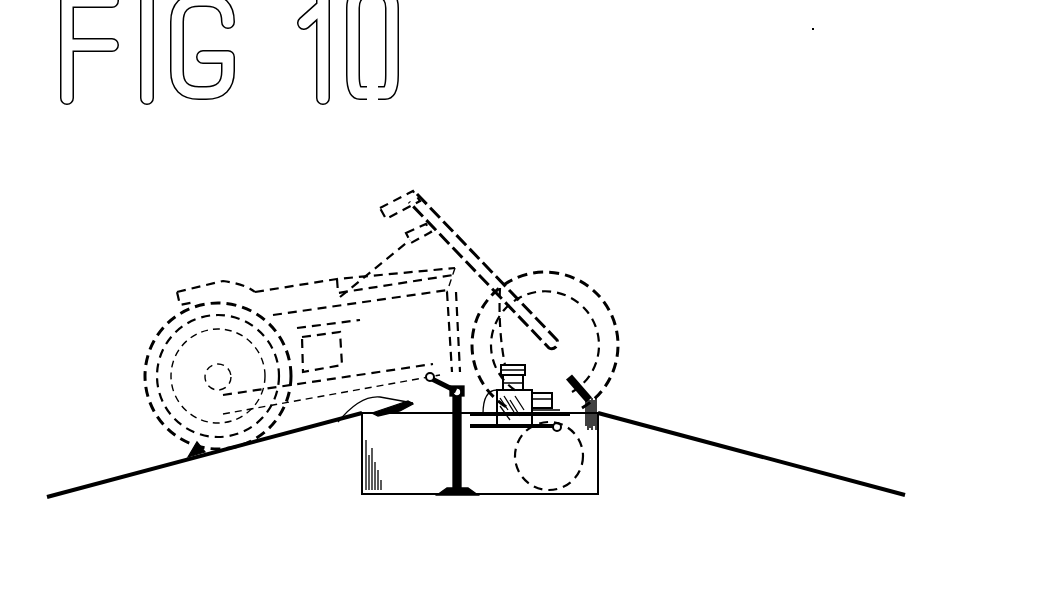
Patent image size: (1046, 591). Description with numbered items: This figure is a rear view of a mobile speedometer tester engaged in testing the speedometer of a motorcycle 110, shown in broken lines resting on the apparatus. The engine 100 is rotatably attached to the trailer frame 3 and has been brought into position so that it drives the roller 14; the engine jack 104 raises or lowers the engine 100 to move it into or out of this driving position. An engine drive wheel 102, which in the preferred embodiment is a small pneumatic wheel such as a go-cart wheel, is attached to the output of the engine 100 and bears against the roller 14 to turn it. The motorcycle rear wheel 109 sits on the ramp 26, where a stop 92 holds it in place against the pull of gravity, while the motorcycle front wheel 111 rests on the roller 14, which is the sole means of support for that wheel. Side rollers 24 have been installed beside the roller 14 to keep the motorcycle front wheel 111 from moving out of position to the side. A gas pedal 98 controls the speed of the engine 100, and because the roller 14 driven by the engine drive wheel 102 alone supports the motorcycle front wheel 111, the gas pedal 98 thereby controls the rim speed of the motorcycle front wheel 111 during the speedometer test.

The trailer frame 3 is at (357, 463).
The roller 14 is at (598, 457).
The side rollers 24 is at (600, 382).
The ramp 26 is at (118, 477).
The stop 92 is at (195, 450).
The gas pedal 98 is at (373, 412).
The engine 100 is at (565, 368).
The engine drive wheel 102 is at (513, 437).
The engine jack 104 is at (453, 460).
The motorcycle rear wheel 109 is at (158, 395).
The motorcycle 110 is at (462, 240).
The motorcycle front wheel 111 is at (583, 285).